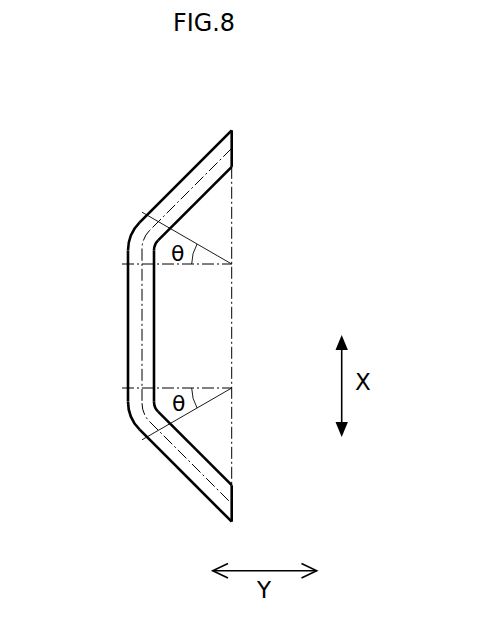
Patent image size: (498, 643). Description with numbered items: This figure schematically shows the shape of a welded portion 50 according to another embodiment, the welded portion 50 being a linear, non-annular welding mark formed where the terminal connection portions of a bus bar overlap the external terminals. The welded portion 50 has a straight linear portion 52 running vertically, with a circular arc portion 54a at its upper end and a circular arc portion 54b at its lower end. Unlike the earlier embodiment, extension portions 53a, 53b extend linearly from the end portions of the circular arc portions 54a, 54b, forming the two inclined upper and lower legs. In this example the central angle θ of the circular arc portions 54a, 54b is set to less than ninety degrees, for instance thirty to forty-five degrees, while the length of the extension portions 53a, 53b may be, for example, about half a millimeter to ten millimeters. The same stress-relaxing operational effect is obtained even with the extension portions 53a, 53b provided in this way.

The welded portion 50 is at (158, 462).
The straight linear portion 52 is at (128, 336).
The extension portion 53a is at (198, 165).
The extension portion 53b is at (188, 477).
The circular arc portion 54a is at (137, 250).
The circular arc portion 54b is at (128, 413).